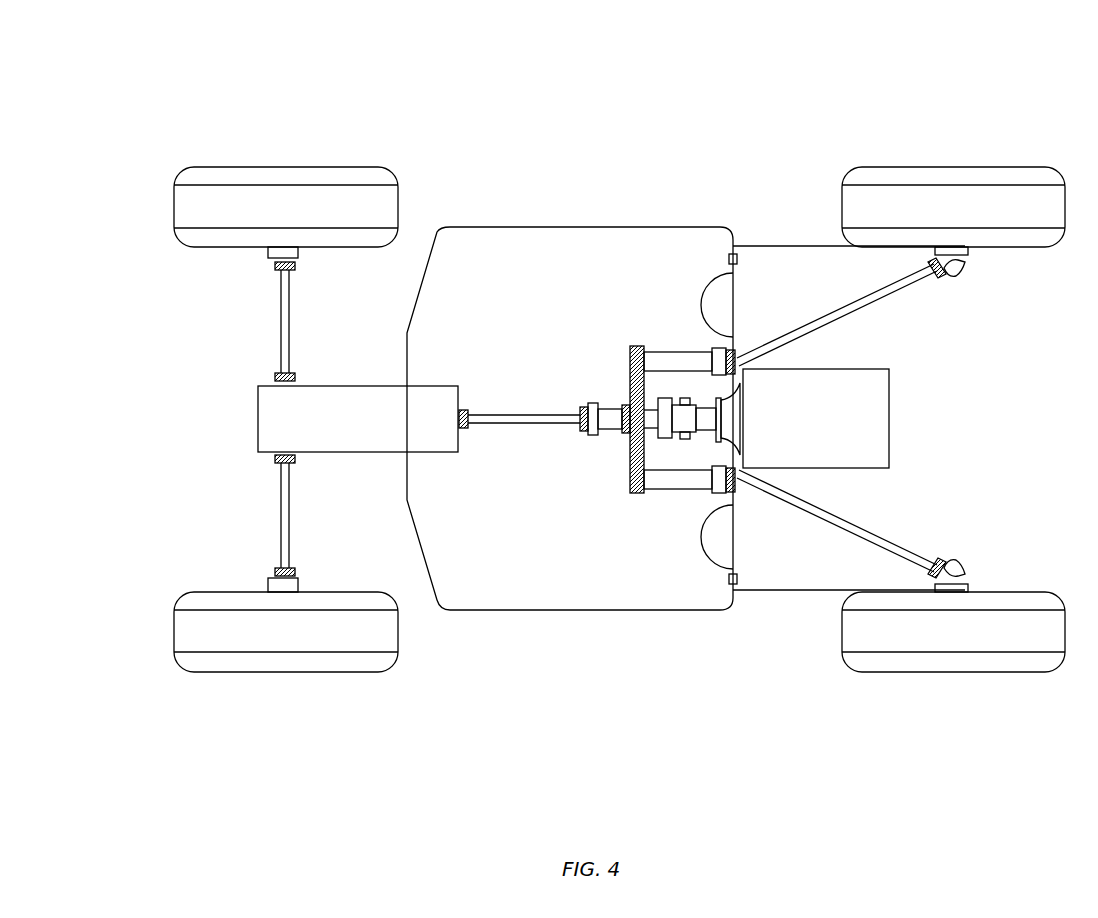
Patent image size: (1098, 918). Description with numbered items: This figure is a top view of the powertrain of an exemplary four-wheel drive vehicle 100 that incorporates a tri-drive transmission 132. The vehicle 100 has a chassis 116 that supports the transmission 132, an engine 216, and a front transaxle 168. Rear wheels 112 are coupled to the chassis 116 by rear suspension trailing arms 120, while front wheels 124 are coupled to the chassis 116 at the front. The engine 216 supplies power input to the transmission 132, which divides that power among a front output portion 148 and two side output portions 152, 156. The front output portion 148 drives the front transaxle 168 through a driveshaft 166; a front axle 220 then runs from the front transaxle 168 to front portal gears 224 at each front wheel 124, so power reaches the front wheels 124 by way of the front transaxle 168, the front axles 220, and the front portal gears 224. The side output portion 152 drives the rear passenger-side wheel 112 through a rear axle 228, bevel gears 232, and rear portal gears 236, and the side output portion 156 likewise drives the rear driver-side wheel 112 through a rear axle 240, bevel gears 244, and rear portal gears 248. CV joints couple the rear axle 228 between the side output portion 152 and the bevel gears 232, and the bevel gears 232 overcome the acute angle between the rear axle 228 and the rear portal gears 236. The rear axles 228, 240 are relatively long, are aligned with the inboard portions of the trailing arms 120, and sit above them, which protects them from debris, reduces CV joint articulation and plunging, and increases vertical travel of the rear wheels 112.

The vehicle 100 is at (838, 40).
The rear wheels 112 is at (1002, 176).
The chassis 116 is at (594, 590).
The rear suspension trailing arms 120 is at (796, 266).
The front wheels 124 is at (238, 176).
The transmission 132 is at (628, 375).
The front output portion 148 is at (614, 427).
The side output portion 152 is at (676, 370).
The side output portion 156 is at (676, 487).
The driveshaft 166 is at (513, 415).
The front transaxle 168 is at (275, 432).
The engine 216 is at (866, 414).
The front axle 220 is at (280, 346).
The front portal gears 224 is at (304, 256).
The rear axle 228 is at (870, 306).
The bevel gears 232 is at (962, 278).
The rear portal gears 236 is at (970, 258).
The rear axle 240 is at (866, 534).
The bevel gears 244 is at (958, 566).
The rear portal gears 248 is at (970, 586).